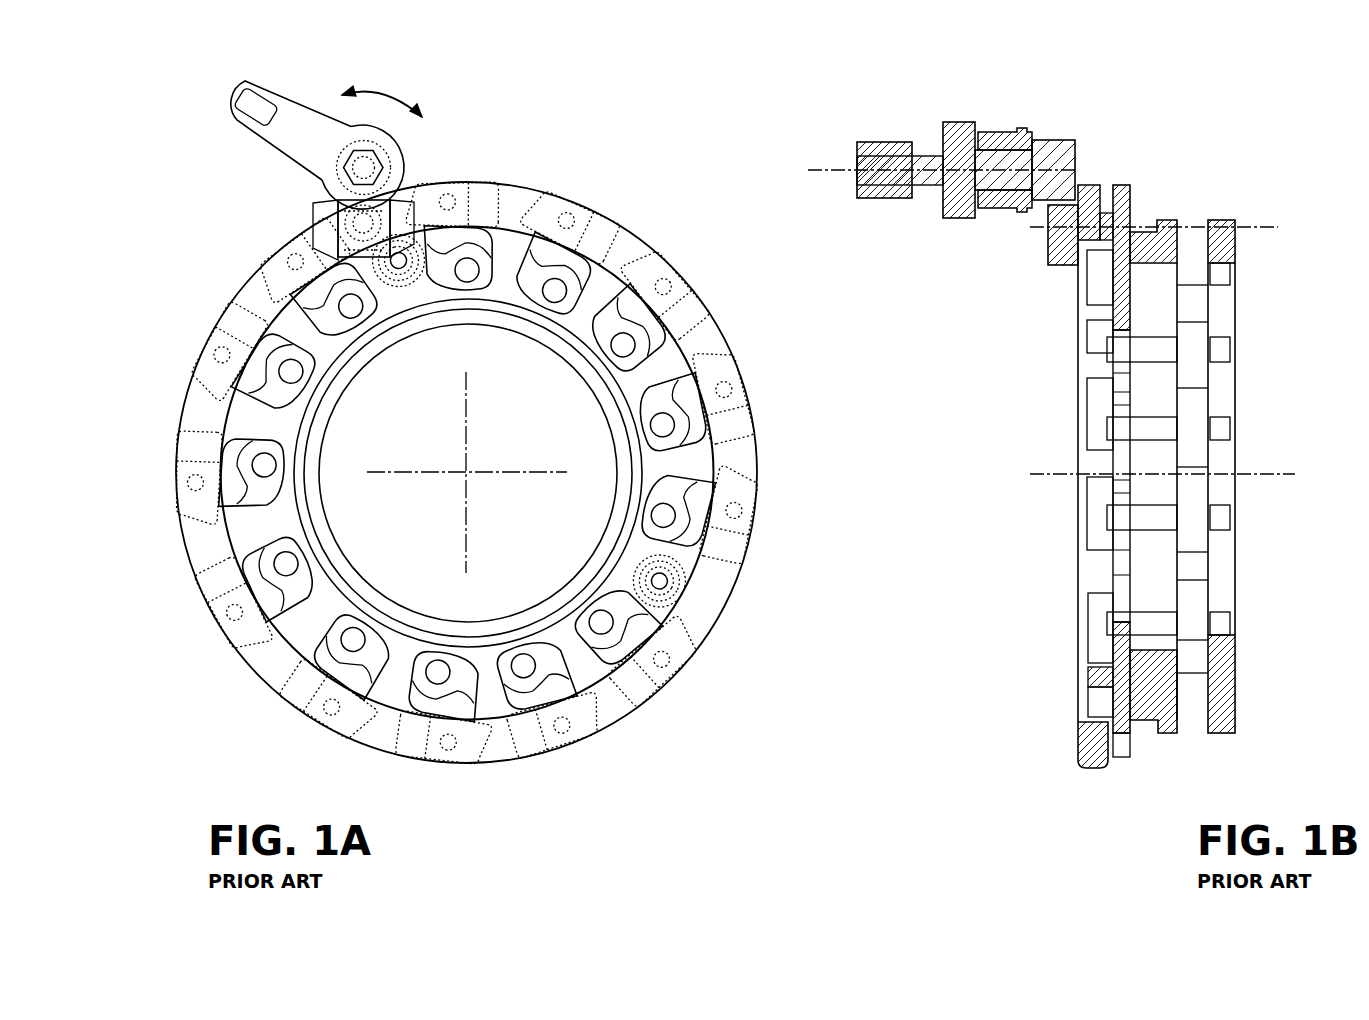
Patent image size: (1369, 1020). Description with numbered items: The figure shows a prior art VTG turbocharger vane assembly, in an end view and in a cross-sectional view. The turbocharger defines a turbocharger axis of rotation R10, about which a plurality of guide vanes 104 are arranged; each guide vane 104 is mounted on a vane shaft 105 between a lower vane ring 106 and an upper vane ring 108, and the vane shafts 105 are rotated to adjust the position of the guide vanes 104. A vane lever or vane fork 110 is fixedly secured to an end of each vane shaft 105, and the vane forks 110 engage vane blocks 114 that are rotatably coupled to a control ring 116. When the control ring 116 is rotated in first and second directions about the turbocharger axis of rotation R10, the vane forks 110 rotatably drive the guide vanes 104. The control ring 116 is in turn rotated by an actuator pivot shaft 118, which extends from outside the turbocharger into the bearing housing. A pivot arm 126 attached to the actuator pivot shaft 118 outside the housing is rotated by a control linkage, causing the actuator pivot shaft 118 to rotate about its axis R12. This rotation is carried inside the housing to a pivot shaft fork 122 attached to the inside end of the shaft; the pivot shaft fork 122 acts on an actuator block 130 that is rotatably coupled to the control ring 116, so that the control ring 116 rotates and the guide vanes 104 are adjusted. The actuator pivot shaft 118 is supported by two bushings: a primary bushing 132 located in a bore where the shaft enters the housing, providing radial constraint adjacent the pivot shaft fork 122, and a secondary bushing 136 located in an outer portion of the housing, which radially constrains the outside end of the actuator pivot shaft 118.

In FIG. 1B, the guide vane 104 is at (1200, 308).
In FIG. 1B, the vane shaft 105 is at (1222, 347).
In FIG. 1B, the lower vane ring 106 is at (1218, 228).
In FIG. 1B, the upper vane ring 108 is at (1145, 238).
In FIG. 1A, the vane fork 110 is at (272, 292).
In FIG. 1B, the vane fork 110 is at (1118, 186).
In FIG. 1A, the vane block 114 is at (205, 348).
In FIG. 1A, the control ring 116 is at (727, 594).
In FIG. 1B, the control ring 116 is at (1082, 740).
In FIG. 1A, the actuator pivot shaft 118 is at (372, 167).
In FIG. 1B, the actuator pivot shaft 118 is at (1040, 155).
In FIG. 1A, the pivot shaft fork 122 is at (425, 220).
In FIG. 1A, the pivot arm 126 is at (303, 115).
In FIG. 1B, the pivot arm 126 is at (950, 120).
In FIG. 1A, the actuator block 130 is at (345, 228).
In FIG. 1B, the actuator block 130 is at (1050, 254).
In FIG. 1B, the primary bushing 132 is at (990, 131).
In FIG. 1B, the secondary bushing 136 is at (880, 140).
In FIG. 1B, the turbocharger axis of rotation R10 is at (1283, 478).
In FIG. 1B, the actuator pivot shaft axis R12 is at (818, 165).